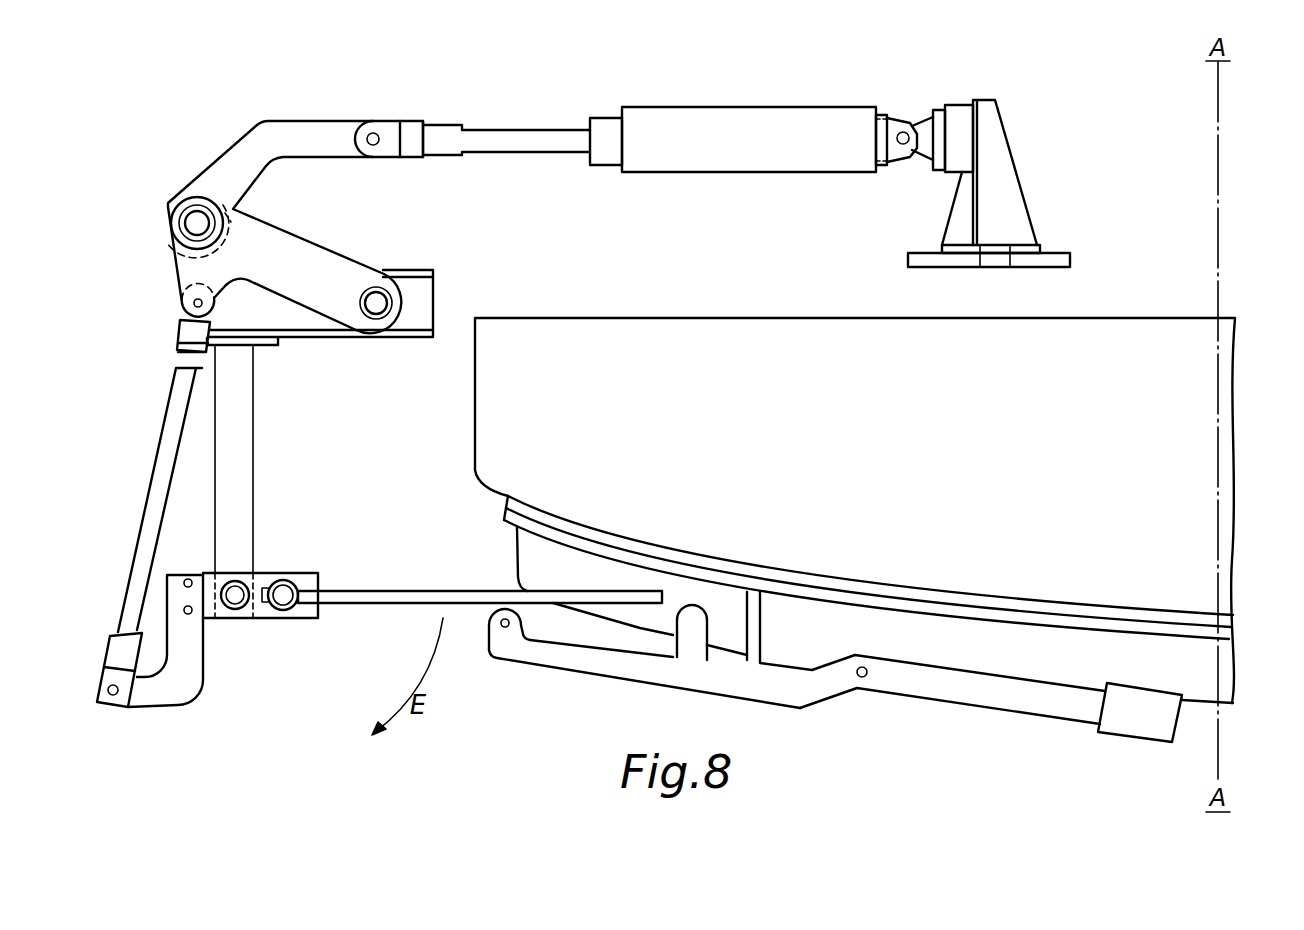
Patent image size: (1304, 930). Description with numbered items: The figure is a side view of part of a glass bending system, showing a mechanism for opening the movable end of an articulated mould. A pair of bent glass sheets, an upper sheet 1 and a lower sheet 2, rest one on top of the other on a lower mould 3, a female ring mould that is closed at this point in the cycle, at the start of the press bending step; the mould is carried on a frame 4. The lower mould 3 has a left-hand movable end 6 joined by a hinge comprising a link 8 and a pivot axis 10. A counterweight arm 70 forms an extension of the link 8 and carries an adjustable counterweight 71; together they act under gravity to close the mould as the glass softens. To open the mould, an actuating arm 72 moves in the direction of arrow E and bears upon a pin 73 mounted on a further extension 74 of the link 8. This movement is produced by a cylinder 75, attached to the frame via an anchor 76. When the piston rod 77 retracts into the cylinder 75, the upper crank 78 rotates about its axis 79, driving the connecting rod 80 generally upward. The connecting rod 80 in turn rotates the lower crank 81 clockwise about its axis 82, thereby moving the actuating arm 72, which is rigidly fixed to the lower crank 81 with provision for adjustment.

The upper sheet 1 is at (1228, 619).
The lower sheet 2 is at (1228, 637).
The lower mould 3 is at (919, 716).
The frame 4 is at (800, 306).
The left-hand movable end 6 is at (526, 552).
The link 8 is at (752, 685).
The pivot axis 10 is at (865, 680).
The counterweight arm 70 is at (1025, 697).
The adjustable counterweight 71 is at (1140, 727).
The actuating arm 72 is at (362, 602).
The pin 73 is at (498, 627).
The further extension 74 is at (565, 657).
The cylinder 75 is at (808, 125).
The anchor 76 is at (999, 155).
The piston rod 77 is at (538, 137).
The upper crank 78 is at (221, 174).
The axis 79 is at (378, 298).
The connecting rod 80 is at (153, 483).
The lower crank 81 is at (188, 667).
The axis 82 is at (236, 590).